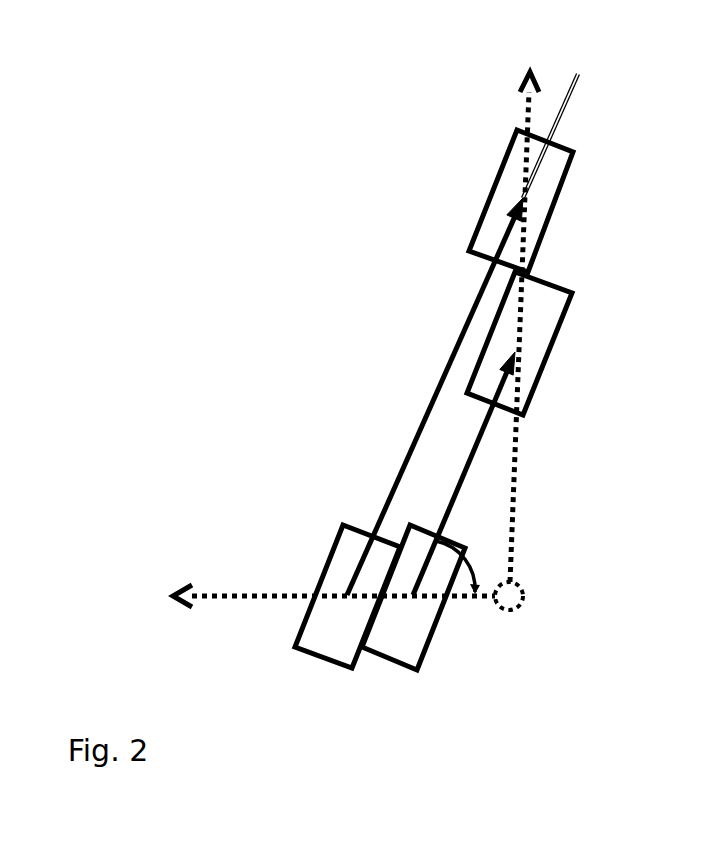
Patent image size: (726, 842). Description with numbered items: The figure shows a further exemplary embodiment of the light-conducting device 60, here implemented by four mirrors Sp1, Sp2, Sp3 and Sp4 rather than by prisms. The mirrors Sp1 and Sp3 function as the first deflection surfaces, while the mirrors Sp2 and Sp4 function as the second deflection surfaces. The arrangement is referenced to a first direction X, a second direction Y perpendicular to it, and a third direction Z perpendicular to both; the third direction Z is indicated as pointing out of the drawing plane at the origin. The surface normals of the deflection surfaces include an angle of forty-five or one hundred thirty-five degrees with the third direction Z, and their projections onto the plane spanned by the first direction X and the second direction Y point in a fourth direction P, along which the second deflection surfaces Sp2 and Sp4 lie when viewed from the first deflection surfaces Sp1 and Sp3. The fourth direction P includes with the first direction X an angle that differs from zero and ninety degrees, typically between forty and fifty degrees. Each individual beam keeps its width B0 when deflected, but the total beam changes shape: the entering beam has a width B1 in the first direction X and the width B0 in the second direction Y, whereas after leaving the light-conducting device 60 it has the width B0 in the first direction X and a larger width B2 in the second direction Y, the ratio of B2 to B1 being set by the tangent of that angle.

The light-conducting device 60 is at (360, 218).
The mirror Sp1 is at (318, 597).
The mirror Sp2 is at (490, 190).
The mirror Sp3 is at (443, 610).
The mirror Sp4 is at (543, 280).
The fourth direction P is at (430, 407).
The width of an individual beam B0 is at (525, 65).
The width of the entering total beam B1 is at (509, 613).
The width of the deflected total beam B2 is at (520, 197).
The first direction X is at (334, 620).
The second direction Y is at (508, 324).
The third direction Z is at (530, 620).